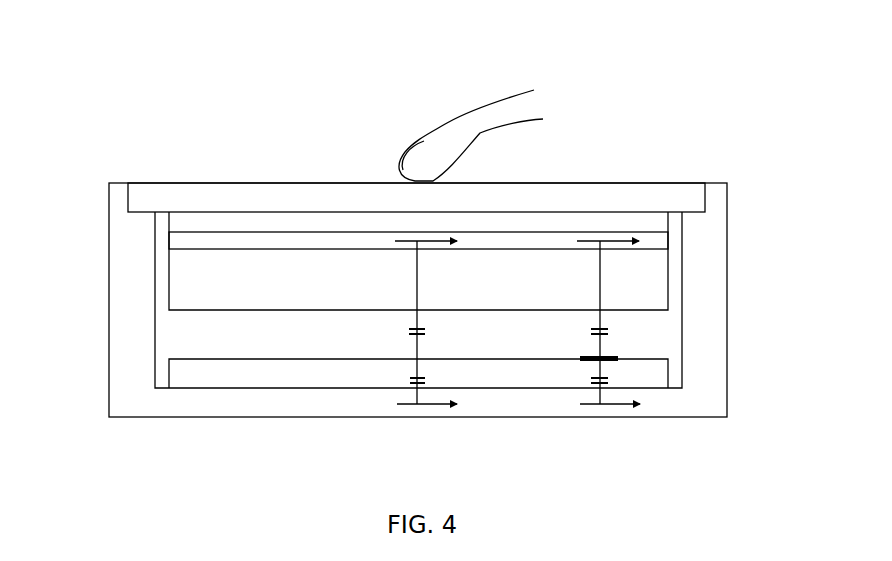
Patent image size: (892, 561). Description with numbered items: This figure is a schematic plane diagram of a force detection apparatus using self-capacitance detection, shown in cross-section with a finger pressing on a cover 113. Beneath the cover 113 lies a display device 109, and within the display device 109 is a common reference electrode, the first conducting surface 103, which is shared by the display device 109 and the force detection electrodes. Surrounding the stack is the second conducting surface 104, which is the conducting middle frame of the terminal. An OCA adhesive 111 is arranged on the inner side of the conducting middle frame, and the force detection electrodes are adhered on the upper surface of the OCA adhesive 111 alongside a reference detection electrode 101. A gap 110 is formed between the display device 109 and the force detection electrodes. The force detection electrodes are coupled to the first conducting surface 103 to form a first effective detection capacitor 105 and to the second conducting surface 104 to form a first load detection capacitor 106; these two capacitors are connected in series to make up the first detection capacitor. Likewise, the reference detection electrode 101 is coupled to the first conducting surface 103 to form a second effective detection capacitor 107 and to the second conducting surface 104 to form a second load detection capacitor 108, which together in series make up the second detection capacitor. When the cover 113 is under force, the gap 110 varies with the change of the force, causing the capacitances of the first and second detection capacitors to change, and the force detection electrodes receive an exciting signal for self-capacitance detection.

The reference detection electrode 101 is at (597, 362).
The first conducting surface 103 is at (182, 242).
The second conducting surface 104 is at (705, 406).
The first effective detection capacitor 105 is at (428, 330).
The first load detection capacitor 106 is at (409, 380).
The second effective detection capacitor 107 is at (590, 330).
The second load detection capacitor 108 is at (617, 411).
The display device 109 is at (182, 290).
The gap 110 is at (638, 333).
The OCA adhesive 111 is at (228, 377).
The cover 113 is at (655, 190).